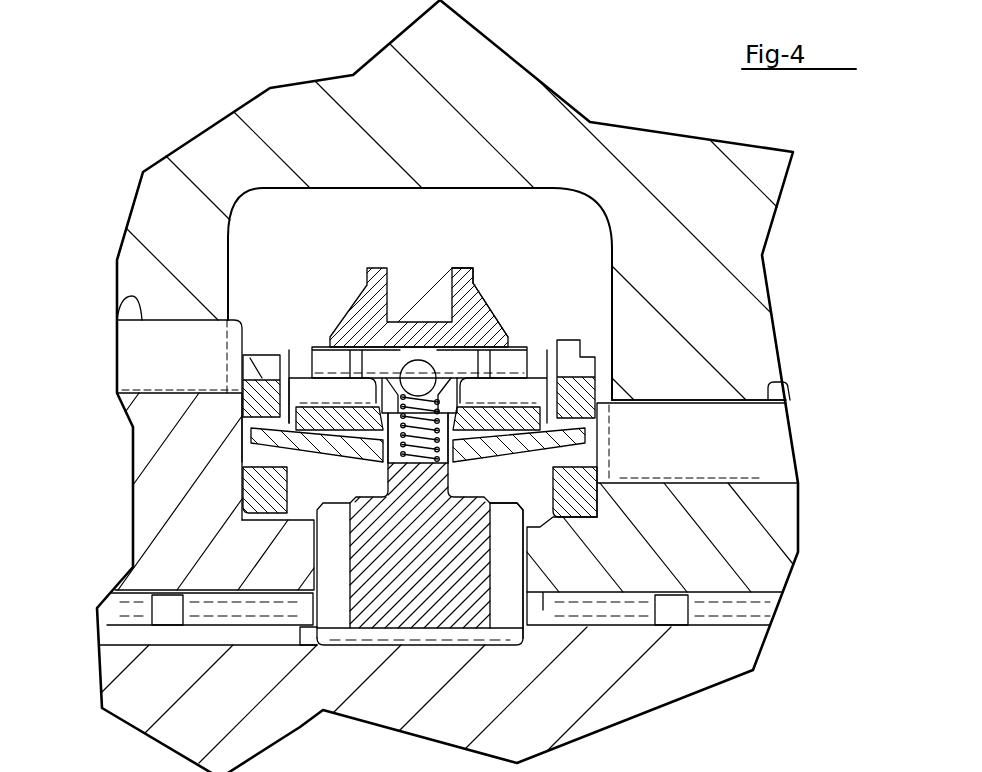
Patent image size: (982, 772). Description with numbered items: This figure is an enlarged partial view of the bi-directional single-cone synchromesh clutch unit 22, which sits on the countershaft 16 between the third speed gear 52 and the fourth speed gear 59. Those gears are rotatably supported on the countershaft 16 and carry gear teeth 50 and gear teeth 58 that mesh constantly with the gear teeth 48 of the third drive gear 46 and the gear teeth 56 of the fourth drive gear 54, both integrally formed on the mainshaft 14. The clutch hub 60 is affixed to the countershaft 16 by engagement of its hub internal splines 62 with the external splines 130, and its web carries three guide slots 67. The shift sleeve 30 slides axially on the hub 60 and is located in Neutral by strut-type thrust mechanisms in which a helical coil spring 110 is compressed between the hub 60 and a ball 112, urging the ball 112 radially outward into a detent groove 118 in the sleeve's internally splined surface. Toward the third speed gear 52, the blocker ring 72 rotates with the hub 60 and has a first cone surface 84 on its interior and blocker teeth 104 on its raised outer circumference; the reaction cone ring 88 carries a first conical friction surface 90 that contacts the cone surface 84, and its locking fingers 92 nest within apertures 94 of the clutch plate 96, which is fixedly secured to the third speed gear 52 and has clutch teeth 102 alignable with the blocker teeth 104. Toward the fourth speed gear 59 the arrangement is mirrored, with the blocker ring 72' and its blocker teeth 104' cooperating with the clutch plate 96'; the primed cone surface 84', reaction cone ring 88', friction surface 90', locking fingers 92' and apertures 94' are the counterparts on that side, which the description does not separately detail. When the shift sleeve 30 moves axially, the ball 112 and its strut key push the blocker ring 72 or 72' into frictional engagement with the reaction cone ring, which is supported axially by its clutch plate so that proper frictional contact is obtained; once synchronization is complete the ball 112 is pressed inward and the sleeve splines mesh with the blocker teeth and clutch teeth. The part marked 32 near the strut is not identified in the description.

The mainshaft 14 is at (667, 157).
The countershaft 16 is at (652, 698).
The single-cone synchromesh clutch unit 22 is at (317, 280).
The shift sleeve 30 is at (480, 290).
The strut upper portion 32 is at (452, 288).
The third drive gear 46 is at (782, 295).
The gear teeth 48 is at (789, 390).
The gear teeth 50 is at (750, 447).
The third speed gear 52 is at (710, 550).
The fourth drive gear 54 is at (127, 275).
The gear teeth 56 is at (117, 298).
The gear teeth 58 is at (118, 338).
The fourth speed gear 59 is at (197, 543).
The clutch hub 60 is at (377, 583).
The hub internal splines 62 is at (330, 633).
The guide slots 67 is at (513, 570).
The blocker ring 72 is at (546, 354).
The blocker ring 72' is at (266, 352).
The first cone surface 84 is at (637, 370).
The left bracket 84' is at (156, 427).
The reaction cone ring 88 is at (500, 421).
The left latch 88' is at (330, 561).
The first conical friction surface 90 is at (511, 299).
The left hook 90' is at (233, 544).
The locking fingers 92 is at (560, 441).
The left pawl bar 92' is at (218, 457).
The aperture 94 is at (627, 483).
The left pawl foot 94' is at (166, 489).
The clutch plate 96 is at (737, 517).
The clutch plate 96' is at (118, 497).
The clutch teeth 102 is at (253, 368).
The blocker teeth 104 is at (618, 324).
The blocker teeth 104' is at (173, 264).
The helical coil spring 110 is at (387, 360).
The ball 112 is at (420, 358).
The detent groove 118 is at (433, 357).
The external splines 130 is at (452, 637).